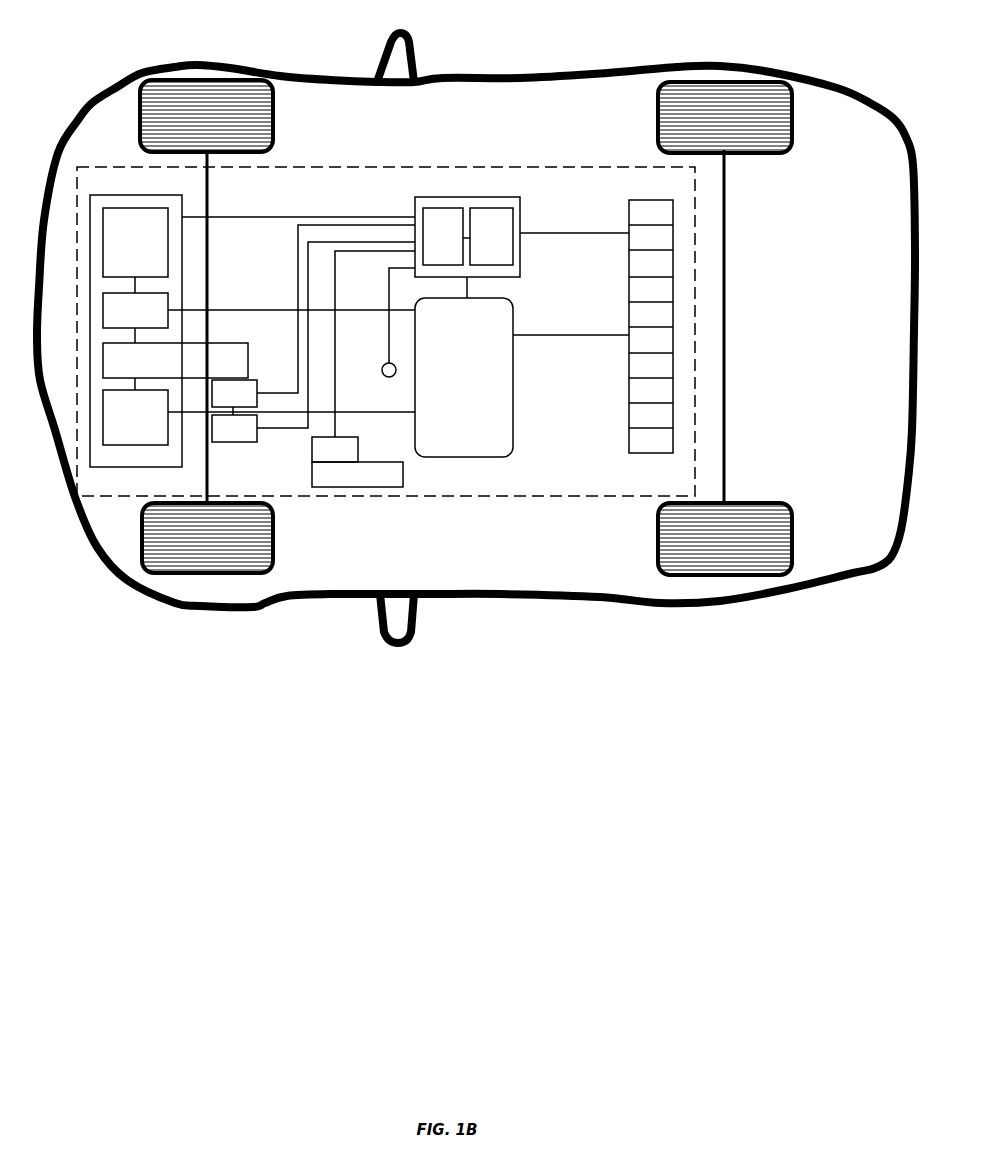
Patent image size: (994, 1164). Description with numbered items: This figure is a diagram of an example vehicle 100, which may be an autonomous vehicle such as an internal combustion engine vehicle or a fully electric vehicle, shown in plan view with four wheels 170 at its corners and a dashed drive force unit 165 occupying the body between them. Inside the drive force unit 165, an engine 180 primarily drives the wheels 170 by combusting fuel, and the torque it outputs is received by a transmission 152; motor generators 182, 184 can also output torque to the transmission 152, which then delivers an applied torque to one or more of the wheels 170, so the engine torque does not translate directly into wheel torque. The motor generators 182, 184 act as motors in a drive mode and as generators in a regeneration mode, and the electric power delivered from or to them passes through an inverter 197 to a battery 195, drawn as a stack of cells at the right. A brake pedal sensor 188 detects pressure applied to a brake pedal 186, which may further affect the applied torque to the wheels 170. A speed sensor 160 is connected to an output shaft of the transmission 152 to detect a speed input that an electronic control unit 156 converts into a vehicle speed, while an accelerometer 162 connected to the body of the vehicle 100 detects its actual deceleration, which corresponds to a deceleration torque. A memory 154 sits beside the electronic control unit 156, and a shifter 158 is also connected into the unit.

The vehicle 100 is at (532, 76).
The drive force unit 165 is at (460, 168).
The wheels 170 is at (187, 122).
The engine 180 is at (122, 253).
The motor generator 182 is at (122, 319).
The transmission 152 is at (162, 369).
The motor generator 184 is at (122, 426).
The speed sensor 160 is at (221, 402).
The accelerometer 162 is at (221, 437).
The brake pedal sensor 188 is at (322, 458).
The brake pedal 186 is at (344, 484).
The shifter 158 is at (382, 372).
The electronic control unit 156 is at (430, 245).
The memory 154 is at (478, 245).
The inverter 197 is at (451, 385).
The battery 195 is at (628, 378).